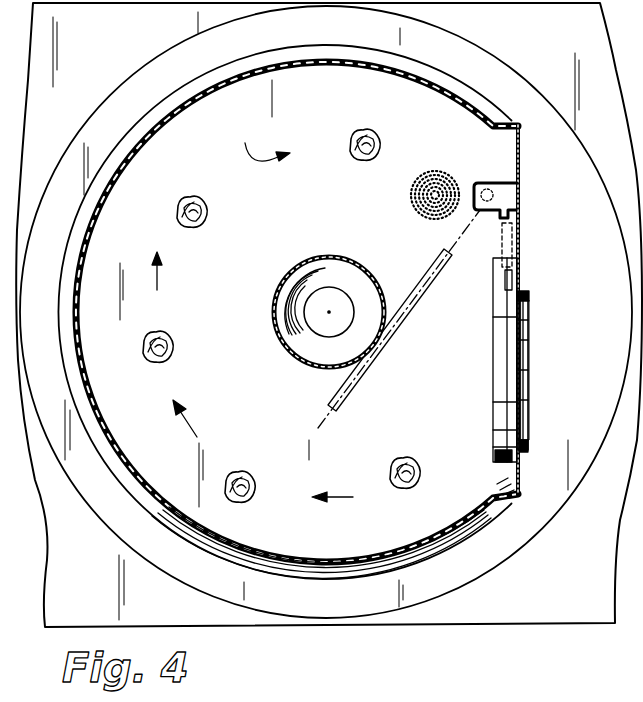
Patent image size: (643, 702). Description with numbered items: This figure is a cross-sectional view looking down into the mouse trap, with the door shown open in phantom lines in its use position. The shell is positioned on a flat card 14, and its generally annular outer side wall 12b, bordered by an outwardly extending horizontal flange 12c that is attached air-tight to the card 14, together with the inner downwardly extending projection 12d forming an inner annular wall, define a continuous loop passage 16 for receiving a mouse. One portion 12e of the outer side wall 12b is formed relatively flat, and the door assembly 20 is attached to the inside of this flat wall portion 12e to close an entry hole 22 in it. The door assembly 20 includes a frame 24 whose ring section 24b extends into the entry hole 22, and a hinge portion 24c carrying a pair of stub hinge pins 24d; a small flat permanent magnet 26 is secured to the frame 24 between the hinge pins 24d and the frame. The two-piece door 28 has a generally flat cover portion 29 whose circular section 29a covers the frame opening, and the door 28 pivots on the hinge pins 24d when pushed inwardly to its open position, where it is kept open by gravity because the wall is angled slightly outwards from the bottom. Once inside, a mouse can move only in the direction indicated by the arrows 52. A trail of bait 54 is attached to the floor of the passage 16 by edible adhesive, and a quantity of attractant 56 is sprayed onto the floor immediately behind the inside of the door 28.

The outer side wall 12b is at (447, 88).
The horizontal flange 12c is at (165, 62).
The inner projection 12d is at (300, 263).
The flat wall portion 12e is at (521, 162).
The card 14 is at (543, 605).
The loop passage 16 is at (208, 388).
The door assembly 20 is at (531, 432).
The entry hole 22 is at (530, 302).
The frame 24 is at (513, 356).
The ring section 24b is at (526, 386).
The hinge portion 24c is at (520, 211).
The stub hinge pins 24d is at (487, 189).
The permanent magnet 26 is at (516, 245).
The door 28 is at (494, 357).
The cover portion 29 is at (493, 399).
The circular section 29a is at (500, 452).
The arrows 52 is at (345, 513).
The bait 54 is at (355, 131).
The attractant 56 is at (416, 192).